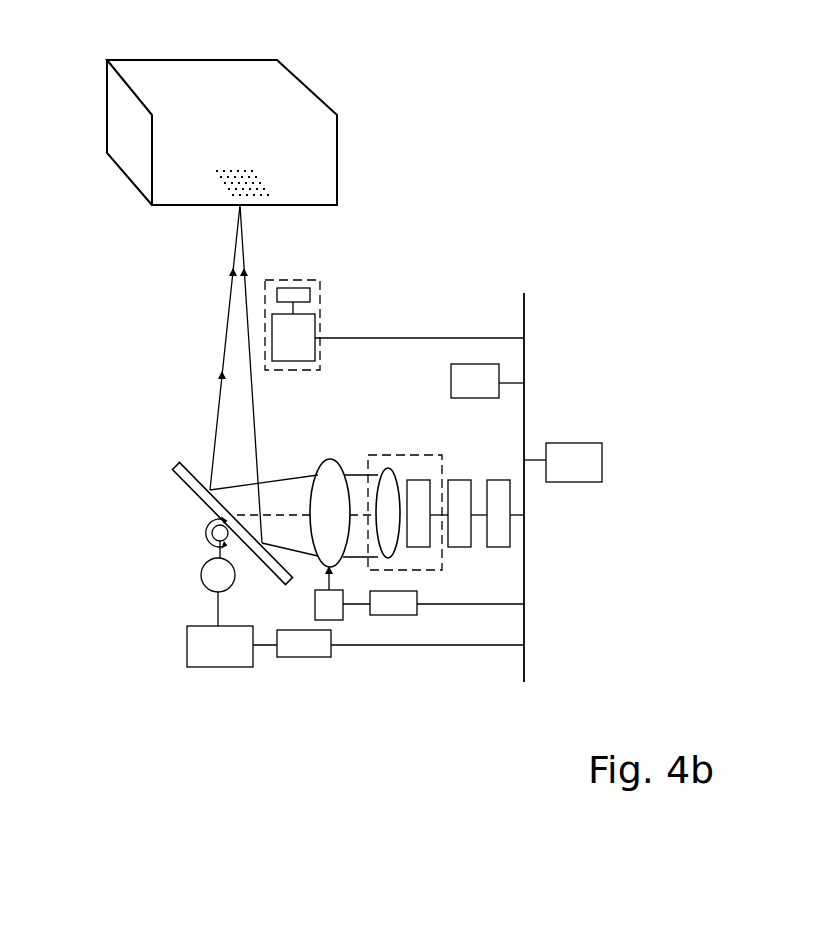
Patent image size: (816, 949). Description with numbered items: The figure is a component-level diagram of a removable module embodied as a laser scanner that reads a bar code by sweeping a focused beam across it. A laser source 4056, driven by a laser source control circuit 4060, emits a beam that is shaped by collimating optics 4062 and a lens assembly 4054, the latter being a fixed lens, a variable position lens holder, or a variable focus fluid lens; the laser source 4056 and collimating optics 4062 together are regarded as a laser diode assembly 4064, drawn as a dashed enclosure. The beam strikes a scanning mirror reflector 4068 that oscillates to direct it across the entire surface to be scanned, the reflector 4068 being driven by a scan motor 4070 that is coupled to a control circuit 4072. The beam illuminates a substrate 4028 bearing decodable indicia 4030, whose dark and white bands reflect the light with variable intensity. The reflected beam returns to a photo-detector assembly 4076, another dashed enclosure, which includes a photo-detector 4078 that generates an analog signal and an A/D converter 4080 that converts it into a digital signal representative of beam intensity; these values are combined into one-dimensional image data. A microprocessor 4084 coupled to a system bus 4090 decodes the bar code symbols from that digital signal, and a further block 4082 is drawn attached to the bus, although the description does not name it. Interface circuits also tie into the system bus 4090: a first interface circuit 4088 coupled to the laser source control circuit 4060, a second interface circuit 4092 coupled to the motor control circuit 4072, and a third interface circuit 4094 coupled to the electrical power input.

The substrate 4028 is at (128, 153).
The decodable indicia 4030 is at (260, 163).
The lens assembly 4054 is at (320, 465).
The laser source 4056 is at (418, 480).
The laser source control circuit 4060 is at (460, 480).
The collimating optics 4062 is at (388, 468).
The laser diode assembly 4064 is at (418, 568).
The scanning mirror reflector 4068 is at (178, 465).
The scan motor 4070 is at (200, 575).
The control circuit 4072 is at (220, 646).
The photo-detector assembly 4076 is at (318, 370).
The photo-detector 4078 is at (310, 294).
The A/D converter 4080 is at (300, 332).
The processor 4082 is at (585, 465).
The microprocessor 4084 is at (480, 376).
The first interface circuit 4088 is at (500, 480).
The system bus 4090 is at (530, 312).
The second interface circuit 4092 is at (304, 657).
The third interface circuit 4094 is at (393, 600).